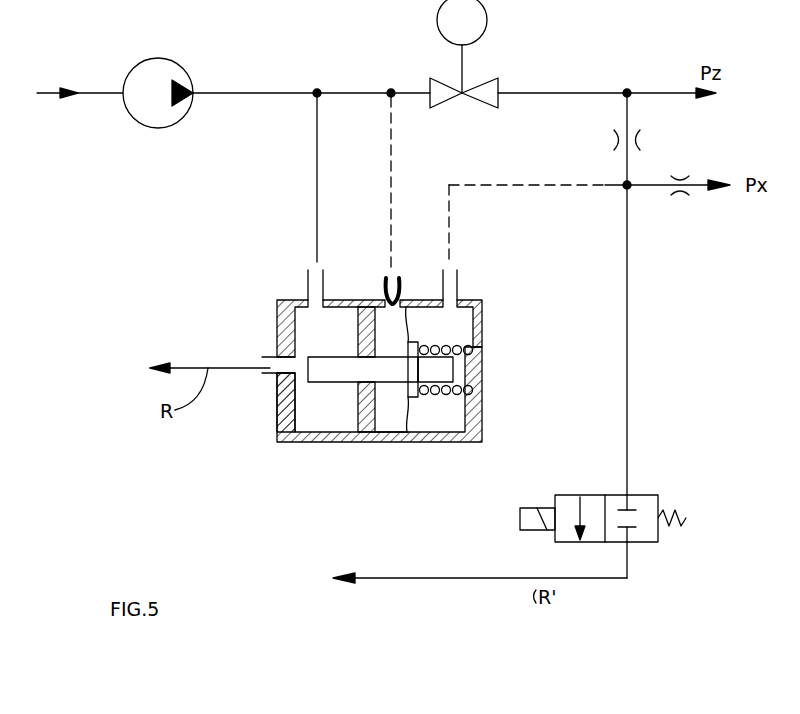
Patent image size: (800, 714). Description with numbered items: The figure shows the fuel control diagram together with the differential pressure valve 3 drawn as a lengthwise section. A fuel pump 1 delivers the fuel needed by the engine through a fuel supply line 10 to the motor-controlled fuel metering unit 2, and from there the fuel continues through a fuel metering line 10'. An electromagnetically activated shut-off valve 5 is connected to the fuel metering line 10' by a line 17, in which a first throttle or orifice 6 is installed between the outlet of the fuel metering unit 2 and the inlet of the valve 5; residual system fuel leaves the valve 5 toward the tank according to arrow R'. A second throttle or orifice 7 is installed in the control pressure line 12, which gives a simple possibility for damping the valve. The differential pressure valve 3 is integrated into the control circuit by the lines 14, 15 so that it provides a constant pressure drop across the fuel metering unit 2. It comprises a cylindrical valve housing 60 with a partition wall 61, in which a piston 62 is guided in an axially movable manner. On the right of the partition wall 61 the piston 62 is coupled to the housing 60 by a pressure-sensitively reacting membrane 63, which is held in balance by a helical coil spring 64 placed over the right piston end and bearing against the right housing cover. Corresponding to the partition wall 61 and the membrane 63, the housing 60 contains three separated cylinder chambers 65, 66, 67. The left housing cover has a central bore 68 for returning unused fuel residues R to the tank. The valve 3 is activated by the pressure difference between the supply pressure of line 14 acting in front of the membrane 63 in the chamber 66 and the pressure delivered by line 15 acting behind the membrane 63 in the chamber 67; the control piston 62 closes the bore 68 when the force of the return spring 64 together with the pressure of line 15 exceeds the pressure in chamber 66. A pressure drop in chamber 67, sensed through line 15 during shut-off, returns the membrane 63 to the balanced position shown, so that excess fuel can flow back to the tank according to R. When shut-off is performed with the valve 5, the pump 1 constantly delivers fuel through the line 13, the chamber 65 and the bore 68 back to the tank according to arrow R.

The fuel pump 1 is at (160, 79).
The fuel metering unit 2 is at (485, 89).
The differential pressure valve 3 is at (279, 290).
The electromagnetically activated shut-off valve 5 is at (567, 530).
The first throttle or orifice 6 is at (618, 142).
The second throttle or orifice 7 is at (677, 191).
The fuel supply line 10 is at (348, 75).
The fuel metering line 10' is at (645, 121).
The control pressure line 12 is at (700, 185).
The line 13 is at (317, 123).
The line 14 is at (391, 127).
The line 15 is at (580, 186).
The line 17 is at (627, 275).
The valve housing 60 is at (412, 400).
The partition wall 61 is at (360, 412).
The piston 62 is at (317, 356).
The membrane 63 is at (410, 330).
The helical coil spring 64 is at (457, 400).
The cylinder chamber 65 is at (295, 418).
The cylinder chamber 66 is at (388, 415).
The cylinder chamber 67 is at (472, 395).
The central bore 68 is at (285, 363).